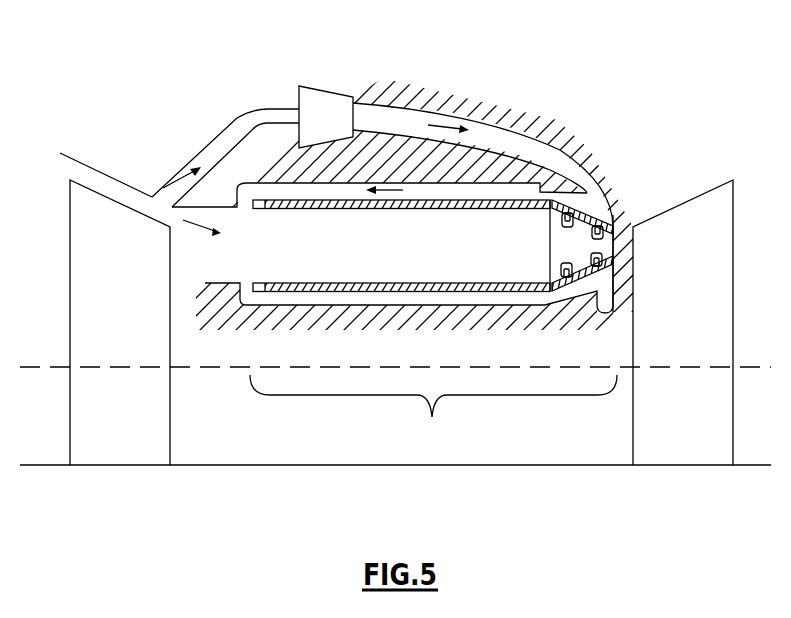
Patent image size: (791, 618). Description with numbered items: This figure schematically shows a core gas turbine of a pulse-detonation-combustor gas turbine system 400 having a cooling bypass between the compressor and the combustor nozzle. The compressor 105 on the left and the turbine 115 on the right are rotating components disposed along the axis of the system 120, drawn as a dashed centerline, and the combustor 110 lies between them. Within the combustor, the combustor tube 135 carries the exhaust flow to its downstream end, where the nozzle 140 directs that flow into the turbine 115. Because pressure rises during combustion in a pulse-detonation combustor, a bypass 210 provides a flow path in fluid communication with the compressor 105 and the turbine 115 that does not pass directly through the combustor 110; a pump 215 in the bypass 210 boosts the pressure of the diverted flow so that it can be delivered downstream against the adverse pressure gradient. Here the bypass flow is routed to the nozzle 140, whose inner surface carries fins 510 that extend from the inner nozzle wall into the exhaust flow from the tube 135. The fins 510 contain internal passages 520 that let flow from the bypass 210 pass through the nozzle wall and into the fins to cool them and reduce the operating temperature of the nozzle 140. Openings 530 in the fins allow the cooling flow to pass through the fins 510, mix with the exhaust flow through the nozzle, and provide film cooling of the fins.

The compressor 105 is at (100, 319).
The turbine 115 is at (663, 319).
The axis of the system 120 is at (183, 367).
The combustor 110 is at (433, 413).
The combustor tube 135 is at (311, 257).
The nozzle 140 is at (552, 258).
The bypass 210 is at (293, 192).
The pump 215 is at (306, 130).
The PDC gas turbine system 400 is at (513, 60).
The fins 510 is at (548, 259).
The internal passages 520 is at (557, 271).
The openings 530 is at (618, 236).